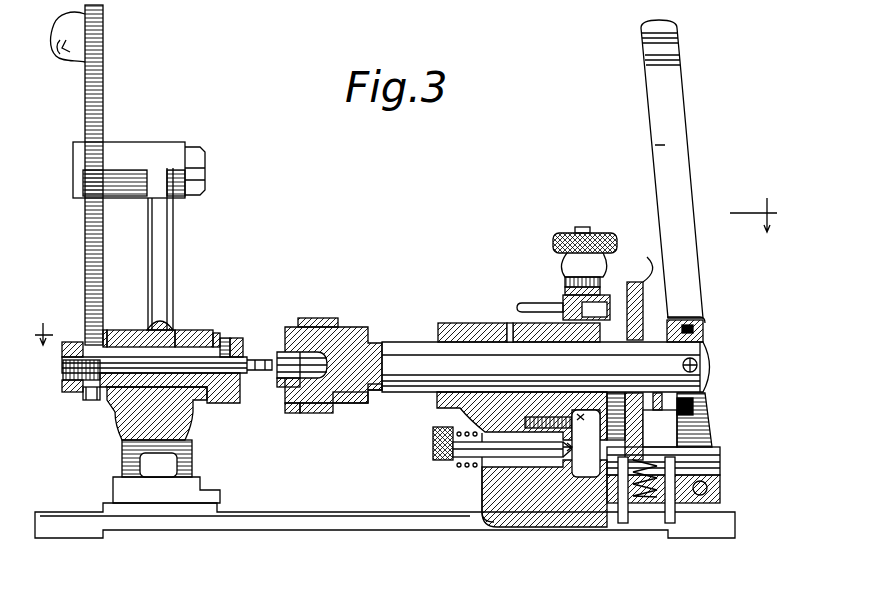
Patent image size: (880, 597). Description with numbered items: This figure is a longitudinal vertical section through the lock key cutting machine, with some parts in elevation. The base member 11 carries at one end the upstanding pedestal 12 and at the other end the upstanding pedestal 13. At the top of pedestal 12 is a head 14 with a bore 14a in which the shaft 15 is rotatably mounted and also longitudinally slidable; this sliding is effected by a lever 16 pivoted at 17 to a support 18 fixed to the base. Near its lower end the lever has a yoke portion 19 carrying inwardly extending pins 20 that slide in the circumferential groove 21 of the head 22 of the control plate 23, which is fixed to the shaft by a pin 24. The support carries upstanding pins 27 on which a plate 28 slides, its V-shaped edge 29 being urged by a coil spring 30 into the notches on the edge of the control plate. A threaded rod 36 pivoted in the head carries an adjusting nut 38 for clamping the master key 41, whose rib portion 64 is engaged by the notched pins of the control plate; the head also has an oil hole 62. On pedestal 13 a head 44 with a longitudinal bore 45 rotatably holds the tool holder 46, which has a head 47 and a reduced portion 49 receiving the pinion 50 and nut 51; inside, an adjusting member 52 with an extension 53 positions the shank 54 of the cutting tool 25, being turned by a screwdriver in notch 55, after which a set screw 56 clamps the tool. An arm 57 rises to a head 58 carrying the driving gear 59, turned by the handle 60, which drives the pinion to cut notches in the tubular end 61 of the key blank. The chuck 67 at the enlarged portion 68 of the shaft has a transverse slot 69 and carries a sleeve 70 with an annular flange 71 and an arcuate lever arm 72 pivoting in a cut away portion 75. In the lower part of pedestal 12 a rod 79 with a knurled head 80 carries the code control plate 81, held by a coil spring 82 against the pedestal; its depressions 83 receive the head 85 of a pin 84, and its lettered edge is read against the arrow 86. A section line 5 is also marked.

The section line 5 is at (415, 271).
The base member 11 is at (326, 518).
The pedestal 12 is at (482, 475).
The pedestal 13 is at (133, 453).
The head 14 is at (457, 315).
The bore 14a is at (483, 345).
The shaft 15 is at (697, 355).
The lever 16 is at (675, 58).
The pivot 17 is at (720, 493).
The support 18 is at (740, 452).
The yoke portion 19 is at (712, 410).
The pins 20 is at (718, 370).
The circumferential groove 21 is at (703, 323).
The head 22 is at (703, 315).
The control plate 23 is at (643, 284).
The pin 24 is at (667, 318).
The cutting tool 25 is at (253, 377).
The upstanding pins 27 is at (625, 510).
The plate 28 is at (707, 457).
The V-shaped edge 29 is at (700, 438).
The coil spring 30 is at (643, 507).
The threaded rod 36 is at (585, 227).
The adjusting nut 38 is at (553, 243).
The master key 41 is at (563, 303).
The head 44 is at (180, 333).
The longitudinal bore 45 is at (128, 337).
The tool holder 46 is at (224, 338).
The head 47 is at (240, 337).
The reduced portion 49 is at (62, 358).
The pinion 50 is at (90, 402).
The nut 51 is at (70, 393).
The adjusting member 52 is at (80, 340).
The extension 53 is at (170, 320).
The shank 54 is at (220, 398).
The notch 55 is at (63, 372).
The set screw 56 is at (225, 333).
The arm 57 is at (160, 228).
The head 58 is at (133, 150).
The driving gear 59 is at (103, 88).
The handle 60 is at (62, 59).
The tubular end 61 is at (340, 327).
The oil hole 62 is at (510, 323).
The rib portion 64 is at (600, 307).
The chuck 67 is at (305, 415).
The enlarged portion 68 is at (358, 405).
The transverse slot 69 is at (366, 393).
The sleeve 70 is at (316, 320).
The annular flange 71 is at (290, 325).
The arcuate lever arm 72 is at (277, 388).
The cut away portion 75 is at (315, 413).
The rod 79 is at (513, 458).
The knurled head 80 is at (433, 453).
The code control plate 81 is at (602, 433).
The coil spring 82 is at (460, 425).
The openings or depressions 83 is at (597, 393).
The pin 84 is at (537, 415).
The head 85 is at (557, 410).
The arrow 86 is at (552, 458).